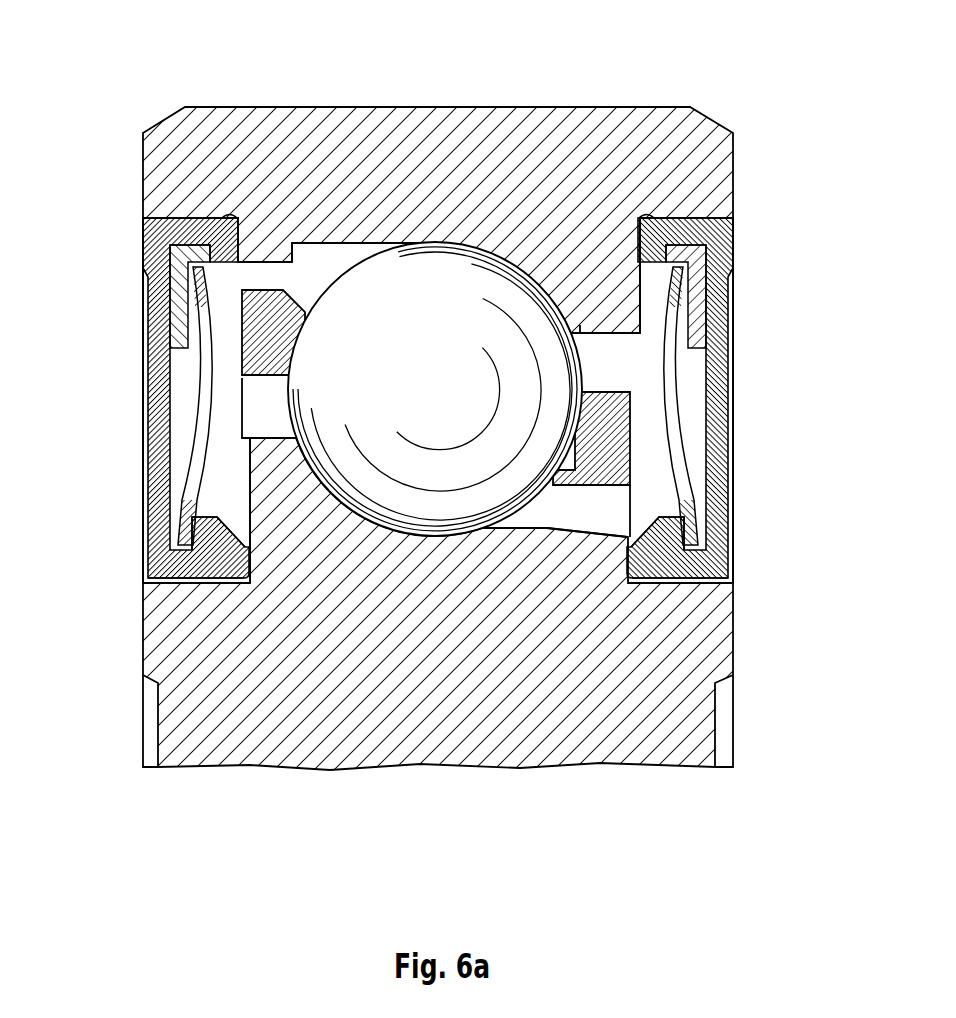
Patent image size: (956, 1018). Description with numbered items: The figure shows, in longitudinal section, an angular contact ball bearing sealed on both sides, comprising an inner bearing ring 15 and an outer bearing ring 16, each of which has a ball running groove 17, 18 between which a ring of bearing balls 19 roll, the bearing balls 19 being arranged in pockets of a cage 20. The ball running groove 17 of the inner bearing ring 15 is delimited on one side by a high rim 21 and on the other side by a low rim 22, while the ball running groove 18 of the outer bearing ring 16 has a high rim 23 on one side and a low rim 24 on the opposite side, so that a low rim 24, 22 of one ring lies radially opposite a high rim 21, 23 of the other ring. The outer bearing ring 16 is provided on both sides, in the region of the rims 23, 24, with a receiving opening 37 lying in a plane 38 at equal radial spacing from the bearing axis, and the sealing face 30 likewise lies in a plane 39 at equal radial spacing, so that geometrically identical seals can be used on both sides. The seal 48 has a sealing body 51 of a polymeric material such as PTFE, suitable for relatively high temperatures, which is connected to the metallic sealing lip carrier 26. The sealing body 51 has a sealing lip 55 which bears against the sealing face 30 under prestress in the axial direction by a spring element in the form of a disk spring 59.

The inner bearing ring 15 is at (455, 745).
The outer bearing ring 16 is at (456, 135).
The ball running groove 17 is at (380, 536).
The ball running groove 18 is at (497, 242).
The bearing balls 19 is at (453, 393).
The cage 20 is at (610, 392).
The high rim 21 is at (273, 455).
The low rim 22 is at (547, 529).
The high rim 23 is at (600, 290).
The low rim 24 is at (387, 240).
The sealing lip carrier 26 is at (177, 303).
The sealing face 30 is at (438, 681).
The receiving opening 37 is at (438, 123).
The plane 38 is at (224, 215).
The plane 39 is at (251, 561).
The seal 48 is at (134, 403).
The sealing body 51 is at (160, 470).
The sealing lip 55 is at (246, 579).
The disk spring 59 is at (183, 504).